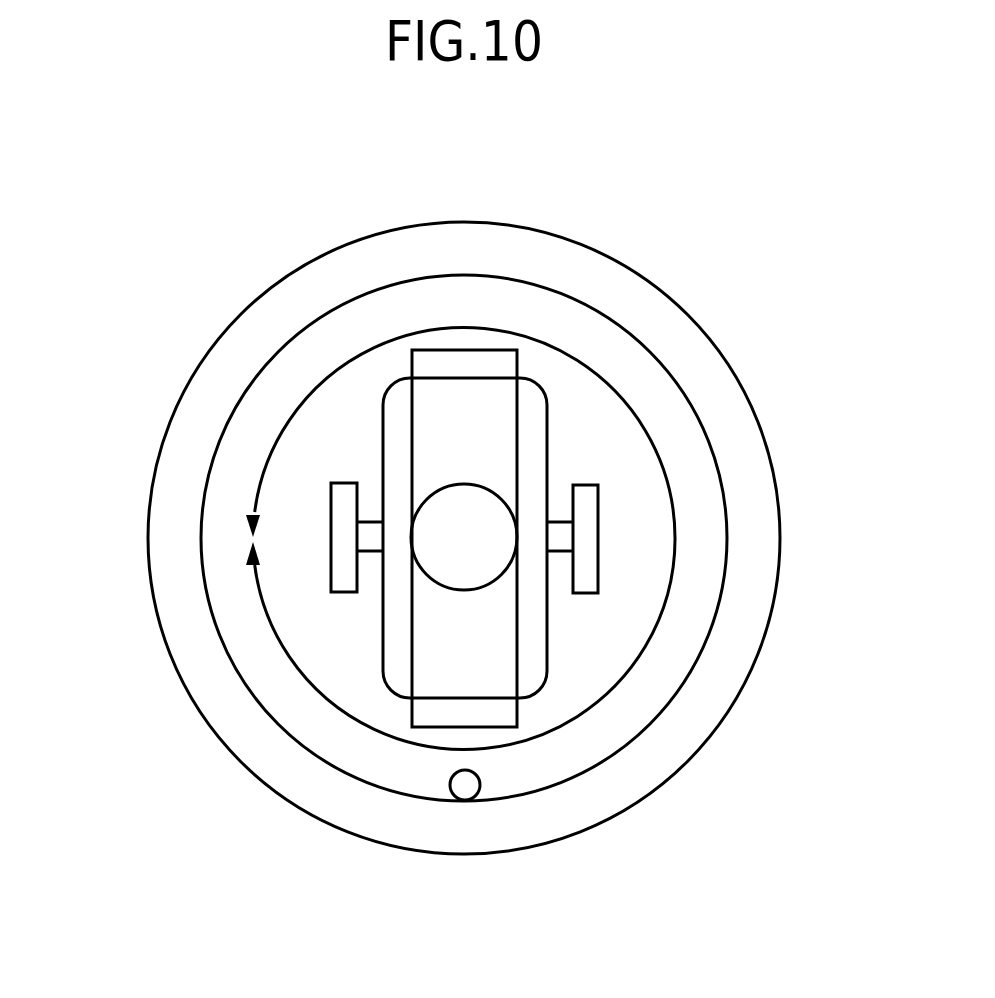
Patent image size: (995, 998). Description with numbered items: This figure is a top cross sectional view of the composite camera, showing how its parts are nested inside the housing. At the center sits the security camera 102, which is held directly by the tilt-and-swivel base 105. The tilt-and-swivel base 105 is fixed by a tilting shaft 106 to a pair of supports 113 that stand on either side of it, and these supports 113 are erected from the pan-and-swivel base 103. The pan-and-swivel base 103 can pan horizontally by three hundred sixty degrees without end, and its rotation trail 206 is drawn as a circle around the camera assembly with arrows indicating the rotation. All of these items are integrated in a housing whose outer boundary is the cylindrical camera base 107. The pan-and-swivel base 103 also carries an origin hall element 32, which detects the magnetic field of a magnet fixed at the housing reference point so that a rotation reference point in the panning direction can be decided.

The origin hall element 32 is at (465, 790).
The security camera 102 is at (486, 488).
The pan-and-swivel base 103 is at (623, 752).
The tilt-and-swivel base 105 is at (460, 350).
The tilting shaft 106 is at (558, 522).
The cylindrical camera base 107 is at (298, 808).
The pair of supports 113 is at (331, 500).
The rotation trail 206 is at (657, 633).